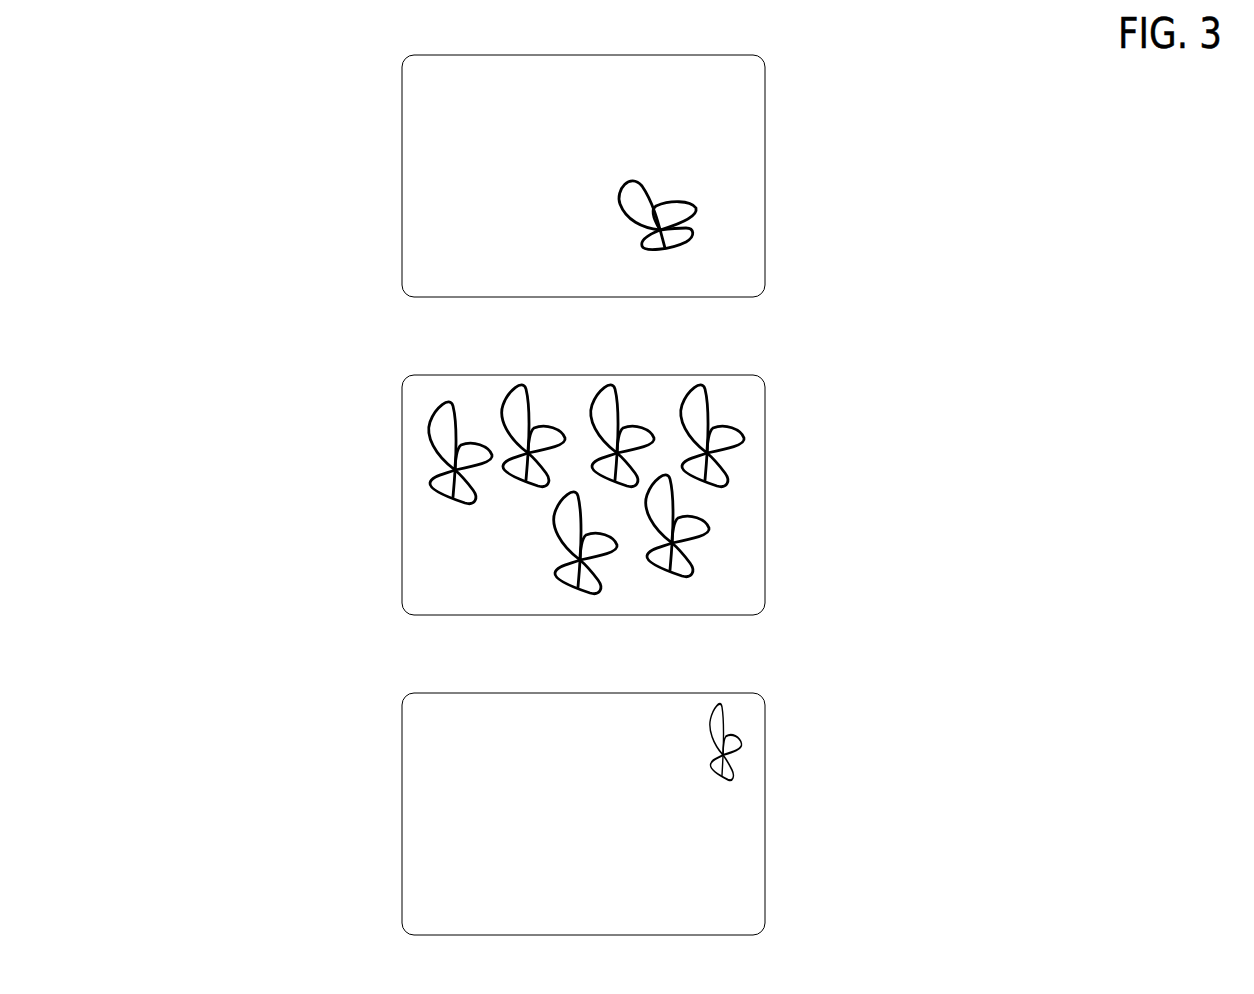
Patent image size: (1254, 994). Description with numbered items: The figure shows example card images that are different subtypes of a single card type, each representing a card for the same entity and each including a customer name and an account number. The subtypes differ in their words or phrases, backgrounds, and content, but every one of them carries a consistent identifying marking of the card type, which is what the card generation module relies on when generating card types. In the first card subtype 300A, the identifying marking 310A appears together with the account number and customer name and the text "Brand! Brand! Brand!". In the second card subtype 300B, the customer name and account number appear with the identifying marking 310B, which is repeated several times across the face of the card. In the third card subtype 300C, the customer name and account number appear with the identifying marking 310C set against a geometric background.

The first card subtype 300A is at (402, 99).
The identifying marking 310A is at (703, 207).
The second card subtype 300B is at (402, 416).
The identifying marking 310B is at (722, 393).
The third card subtype 300C is at (402, 737).
The identifying marking 310C is at (740, 715).